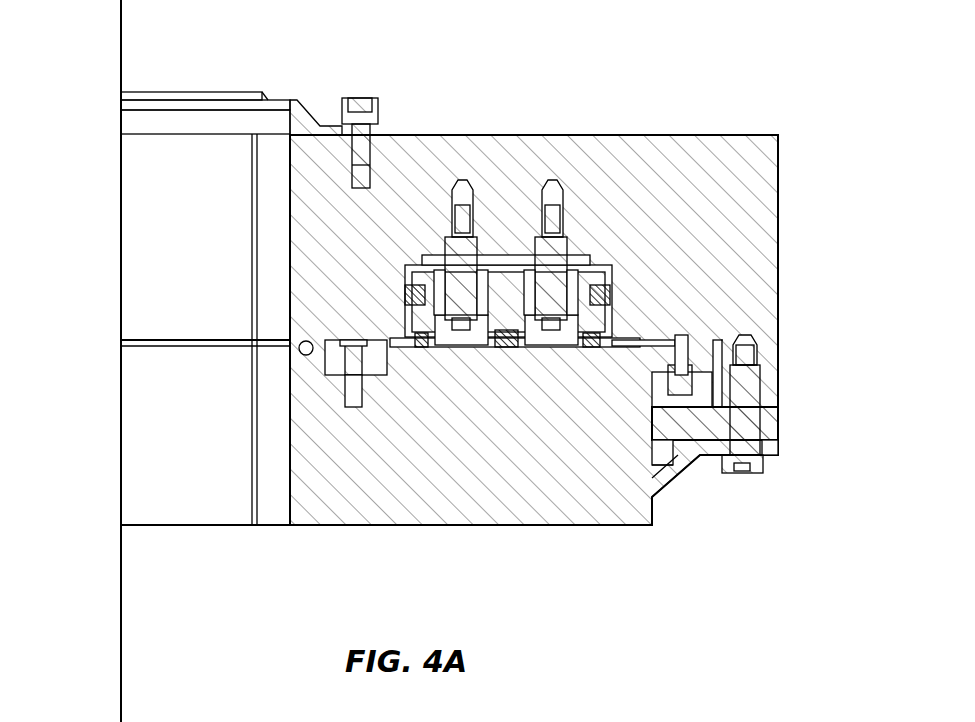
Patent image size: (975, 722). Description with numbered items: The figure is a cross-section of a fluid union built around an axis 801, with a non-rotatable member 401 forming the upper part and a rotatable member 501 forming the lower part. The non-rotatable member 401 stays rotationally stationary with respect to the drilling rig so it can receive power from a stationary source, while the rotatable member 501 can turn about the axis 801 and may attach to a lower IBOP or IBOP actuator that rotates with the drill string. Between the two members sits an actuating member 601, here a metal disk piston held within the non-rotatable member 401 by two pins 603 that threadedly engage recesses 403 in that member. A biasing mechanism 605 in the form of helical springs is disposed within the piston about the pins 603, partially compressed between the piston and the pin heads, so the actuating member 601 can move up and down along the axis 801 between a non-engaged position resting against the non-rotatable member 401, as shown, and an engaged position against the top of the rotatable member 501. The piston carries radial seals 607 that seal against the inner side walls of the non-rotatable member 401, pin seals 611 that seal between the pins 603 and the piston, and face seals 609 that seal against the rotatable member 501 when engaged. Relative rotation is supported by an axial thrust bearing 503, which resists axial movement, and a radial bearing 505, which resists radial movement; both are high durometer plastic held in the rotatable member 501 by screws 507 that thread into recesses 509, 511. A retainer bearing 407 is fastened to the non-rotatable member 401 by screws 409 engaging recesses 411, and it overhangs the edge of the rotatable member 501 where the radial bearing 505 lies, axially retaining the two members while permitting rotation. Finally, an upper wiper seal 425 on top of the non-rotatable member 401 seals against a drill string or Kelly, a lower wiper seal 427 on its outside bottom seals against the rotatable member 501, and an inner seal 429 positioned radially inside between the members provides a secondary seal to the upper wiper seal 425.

The axis 801 is at (121, 36).
The non-rotatable member 401 is at (606, 137).
The rotatable member 501 is at (462, 515).
The upper wiper seal 425 is at (312, 102).
The recesses 403 is at (458, 192).
The pins 603 is at (455, 240).
The pin seals 611 is at (576, 258).
The actuating member 601 is at (612, 266).
The radial seals 607 is at (614, 300).
The biasing mechanism 605 is at (500, 340).
The face seals 609 is at (588, 340).
The inner seal 429 is at (300, 351).
The axial thrust bearing 503 is at (330, 368).
The screws 507 is at (363, 380).
The recess 511 is at (357, 404).
The recess 509 is at (680, 338).
The radial bearing 505 is at (697, 378).
The recesses 411 is at (752, 346).
The retainer bearing 407 is at (772, 425).
The screws 409 is at (762, 462).
The lower wiper seal 427 is at (672, 482).